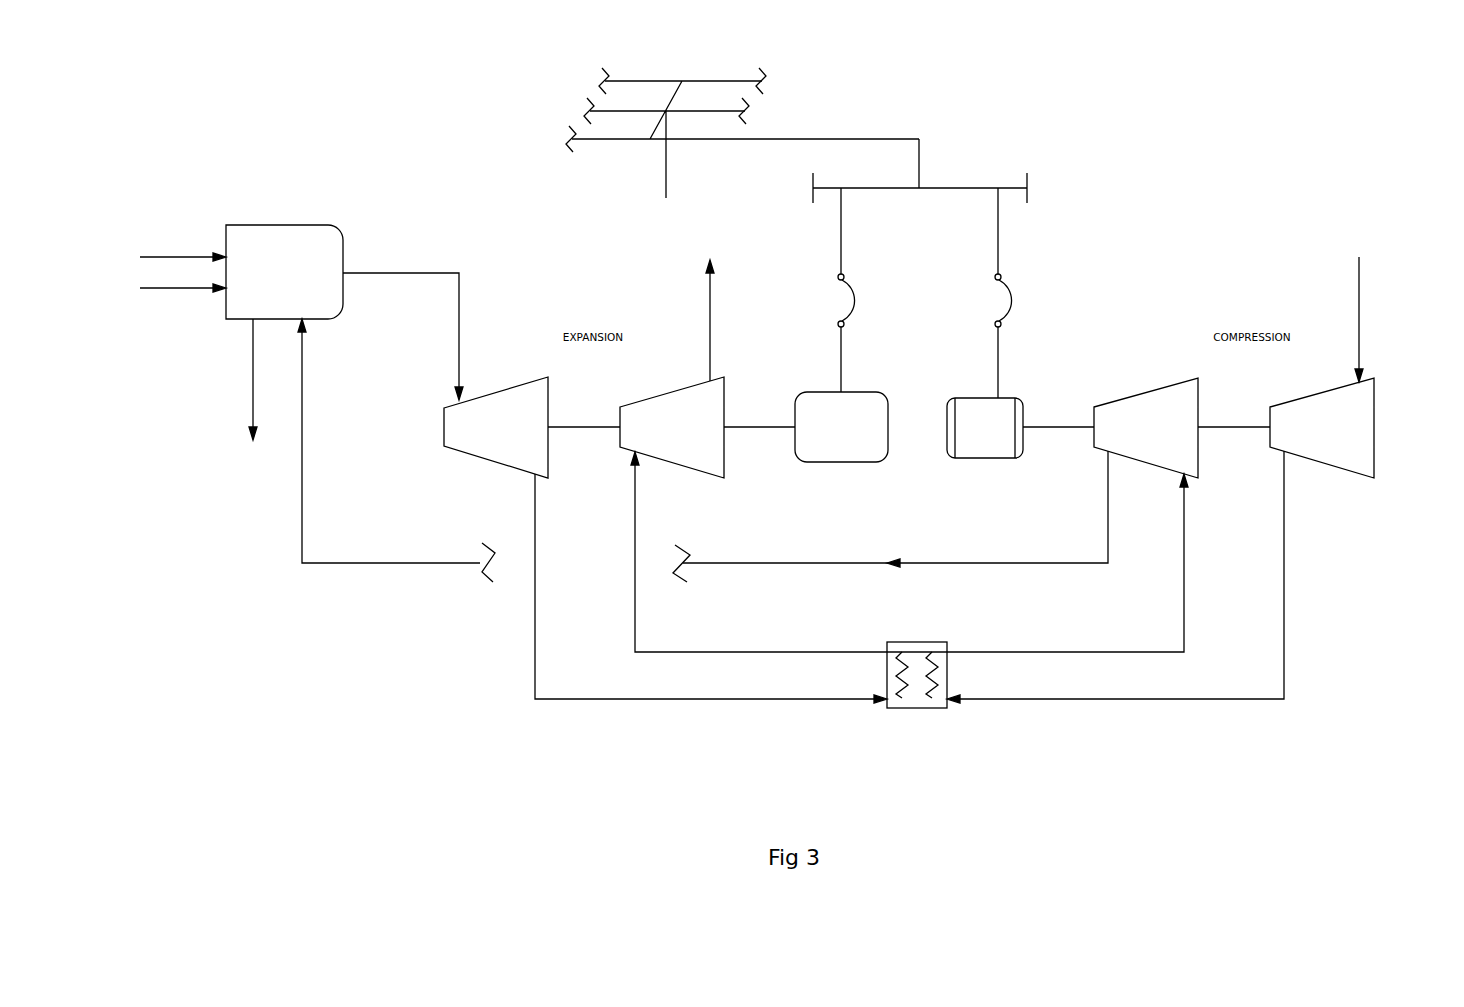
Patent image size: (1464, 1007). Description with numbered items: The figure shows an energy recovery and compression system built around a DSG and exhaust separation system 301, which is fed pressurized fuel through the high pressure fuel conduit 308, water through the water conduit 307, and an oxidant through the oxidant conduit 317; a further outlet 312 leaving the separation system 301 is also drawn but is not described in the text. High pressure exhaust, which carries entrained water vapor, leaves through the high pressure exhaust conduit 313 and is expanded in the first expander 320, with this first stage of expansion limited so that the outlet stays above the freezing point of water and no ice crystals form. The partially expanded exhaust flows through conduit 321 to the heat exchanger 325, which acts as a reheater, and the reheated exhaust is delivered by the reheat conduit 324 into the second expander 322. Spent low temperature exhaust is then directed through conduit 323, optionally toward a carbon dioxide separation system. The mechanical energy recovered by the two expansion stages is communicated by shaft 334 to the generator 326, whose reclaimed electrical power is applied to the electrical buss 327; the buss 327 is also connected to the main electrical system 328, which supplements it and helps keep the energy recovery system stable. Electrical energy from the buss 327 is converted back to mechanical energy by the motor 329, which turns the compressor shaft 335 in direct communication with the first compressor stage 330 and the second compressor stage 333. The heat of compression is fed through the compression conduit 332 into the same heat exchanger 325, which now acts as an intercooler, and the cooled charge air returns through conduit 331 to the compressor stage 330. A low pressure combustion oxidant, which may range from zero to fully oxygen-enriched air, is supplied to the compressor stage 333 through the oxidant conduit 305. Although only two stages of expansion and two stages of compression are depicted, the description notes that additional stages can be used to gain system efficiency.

The DSG and exhaust separation system 301 is at (293, 225).
The oxidant conduit 305 is at (1360, 328).
The water conduit 307 is at (166, 290).
The high pressure fuel conduit 308 is at (167, 257).
The steam outlet 312 is at (253, 400).
The high pressure exhaust conduit 313 is at (460, 327).
The oxidant conduit 317 is at (302, 400).
The first expander 320 is at (443, 448).
The conduit 321 is at (677, 699).
The second expander 322 is at (723, 377).
The conduit 323 is at (710, 328).
The reheat conduit 324 is at (742, 652).
The heat exchanger 325 is at (917, 642).
The generator 326 is at (857, 392).
The electrical buss 327 is at (883, 189).
The main electrical system 328 is at (713, 81).
The motor 329 is at (1013, 398).
The first compressor stage 330 is at (1199, 412).
The conduit 331 is at (1184, 583).
The compression conduit 332 is at (1284, 583).
The second compressor stage 333 is at (1375, 412).
The shaft 334 is at (757, 428).
The compressor shaft 335 is at (1062, 427).